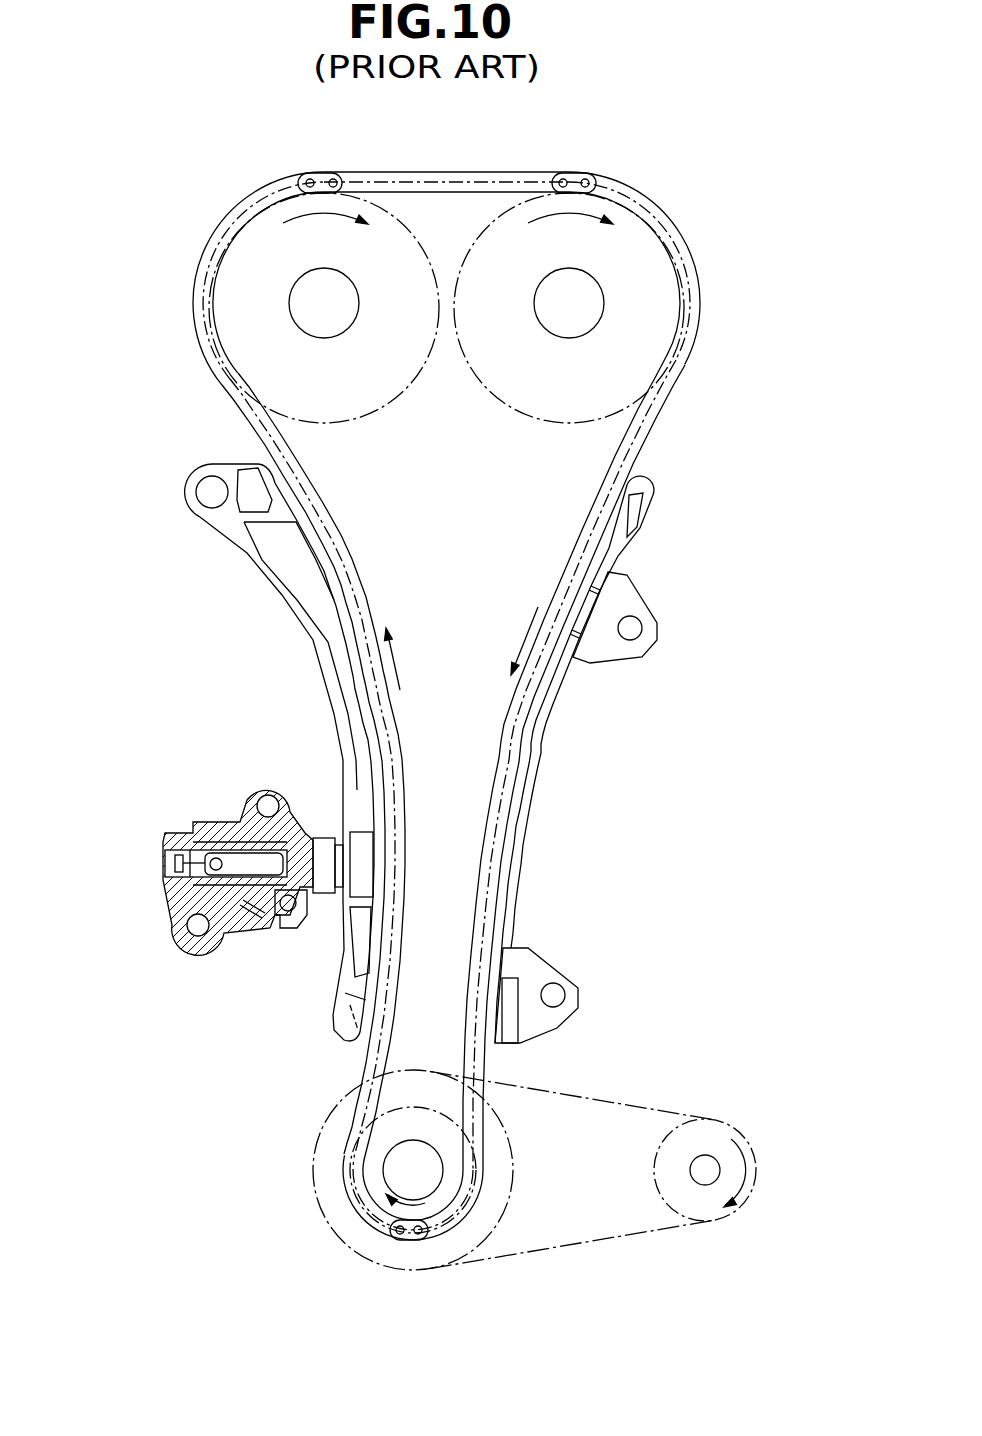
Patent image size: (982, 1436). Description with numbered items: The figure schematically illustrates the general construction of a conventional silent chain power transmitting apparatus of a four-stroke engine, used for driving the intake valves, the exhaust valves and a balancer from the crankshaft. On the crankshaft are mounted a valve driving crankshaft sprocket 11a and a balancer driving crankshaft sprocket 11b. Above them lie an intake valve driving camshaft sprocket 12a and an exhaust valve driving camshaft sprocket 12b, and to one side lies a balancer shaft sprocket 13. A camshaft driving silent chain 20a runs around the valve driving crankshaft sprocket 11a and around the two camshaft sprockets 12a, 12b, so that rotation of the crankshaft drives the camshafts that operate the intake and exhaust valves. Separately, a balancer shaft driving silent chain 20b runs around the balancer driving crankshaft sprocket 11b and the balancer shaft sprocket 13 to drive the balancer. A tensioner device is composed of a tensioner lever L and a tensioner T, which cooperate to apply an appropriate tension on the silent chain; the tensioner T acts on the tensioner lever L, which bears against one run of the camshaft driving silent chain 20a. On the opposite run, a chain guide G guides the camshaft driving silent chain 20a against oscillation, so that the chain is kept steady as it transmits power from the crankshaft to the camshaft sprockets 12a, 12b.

The intake valve driving camshaft sprocket 12a is at (235, 293).
The exhaust valve driving camshaft sprocket 12b is at (653, 288).
The camshaft driving silent chain 20a is at (640, 452).
The balancer shaft driving silent chain 20b is at (598, 1097).
The balancer shaft sprocket 13 is at (720, 1138).
The valve driving crankshaft sprocket 11a is at (377, 1147).
The balancer driving crankshaft sprocket 11b is at (328, 1198).
The tensioner lever L is at (310, 638).
The tensioner T is at (243, 800).
The chain guide G is at (548, 765).